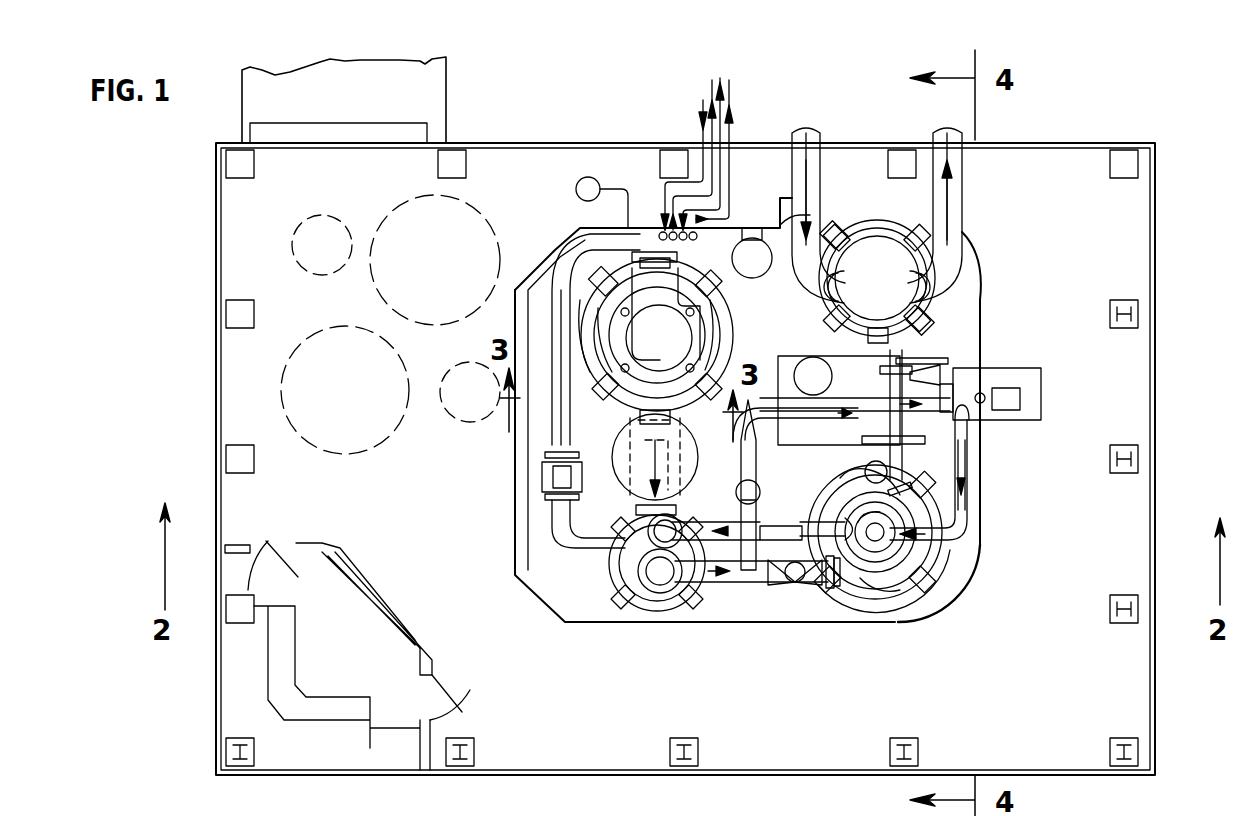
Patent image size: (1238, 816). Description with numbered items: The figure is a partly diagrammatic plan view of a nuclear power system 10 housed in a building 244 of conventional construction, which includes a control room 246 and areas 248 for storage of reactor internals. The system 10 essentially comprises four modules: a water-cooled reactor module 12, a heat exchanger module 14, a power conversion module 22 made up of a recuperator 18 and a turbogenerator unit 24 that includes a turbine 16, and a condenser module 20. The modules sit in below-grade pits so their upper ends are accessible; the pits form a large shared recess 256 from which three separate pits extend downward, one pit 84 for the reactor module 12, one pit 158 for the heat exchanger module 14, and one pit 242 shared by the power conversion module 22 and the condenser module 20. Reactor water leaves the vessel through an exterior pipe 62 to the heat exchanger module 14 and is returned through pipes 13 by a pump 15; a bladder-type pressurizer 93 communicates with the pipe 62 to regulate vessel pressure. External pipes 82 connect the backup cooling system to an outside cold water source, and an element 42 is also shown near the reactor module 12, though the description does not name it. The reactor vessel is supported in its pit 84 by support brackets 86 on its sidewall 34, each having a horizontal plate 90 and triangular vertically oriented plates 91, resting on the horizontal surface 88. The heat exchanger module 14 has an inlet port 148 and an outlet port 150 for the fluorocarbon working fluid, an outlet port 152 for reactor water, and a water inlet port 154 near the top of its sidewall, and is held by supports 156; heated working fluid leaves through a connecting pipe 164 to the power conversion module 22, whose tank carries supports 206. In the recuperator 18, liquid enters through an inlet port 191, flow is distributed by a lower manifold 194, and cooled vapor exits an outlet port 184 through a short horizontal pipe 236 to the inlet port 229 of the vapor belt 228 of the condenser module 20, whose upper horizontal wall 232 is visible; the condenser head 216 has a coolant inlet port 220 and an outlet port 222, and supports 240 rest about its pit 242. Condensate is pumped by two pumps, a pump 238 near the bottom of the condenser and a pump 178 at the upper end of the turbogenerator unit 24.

The system 10 is at (602, 135).
The reactor module 12 is at (722, 335).
The pipes 13 is at (548, 545).
The heat exchanger module 14 is at (652, 608).
The pump 15 is at (542, 475).
The turbine 16 is at (935, 570).
The recuperator 18 is at (948, 535).
The condenser module 20 is at (852, 230).
The power conversion module 22 is at (910, 592).
The turbogenerator unit 24 is at (880, 592).
The sidewall 34 is at (704, 322).
The sensor 42 is at (628, 240).
The exterior pipe 62 is at (612, 426).
The external pipes 82 is at (732, 175).
The pit 84 is at (728, 305).
The support brackets 86 is at (632, 372).
The horizontal surface 88 is at (730, 345).
The horizontal plate 90 is at (595, 392).
The vertically oriented plates 91 is at (622, 380).
The pressurizer 93 is at (690, 480).
The inlet port 148 is at (645, 532).
The outlet port 150 is at (640, 610).
The outlet port 152 is at (625, 578).
The inlet port 154 is at (636, 508).
The supports 156 is at (698, 590).
The pit 158 is at (672, 612).
The connecting pipe 164 is at (728, 600).
The pump 178 is at (869, 525).
The outlet port 184 is at (975, 440).
The inlet port 191 is at (835, 490).
The lower manifold 194 is at (832, 515).
The supports 206 is at (935, 570).
The head 216 is at (877, 278).
The inlet port 220 is at (880, 288).
The outlet port 222 is at (925, 300).
The vapor belt 228 is at (935, 330).
The inlet port 229 is at (950, 372).
The upper horizontal wall 232 is at (935, 318).
The horizontal pipe 236 is at (852, 427).
The pump 238 is at (1044, 395).
The supports 240 is at (930, 335).
The pit 242 is at (880, 226).
The building 244 is at (520, 790).
The control room 246 is at (372, 555).
The areas 248 is at (444, 366).
The recess 256 is at (530, 510).